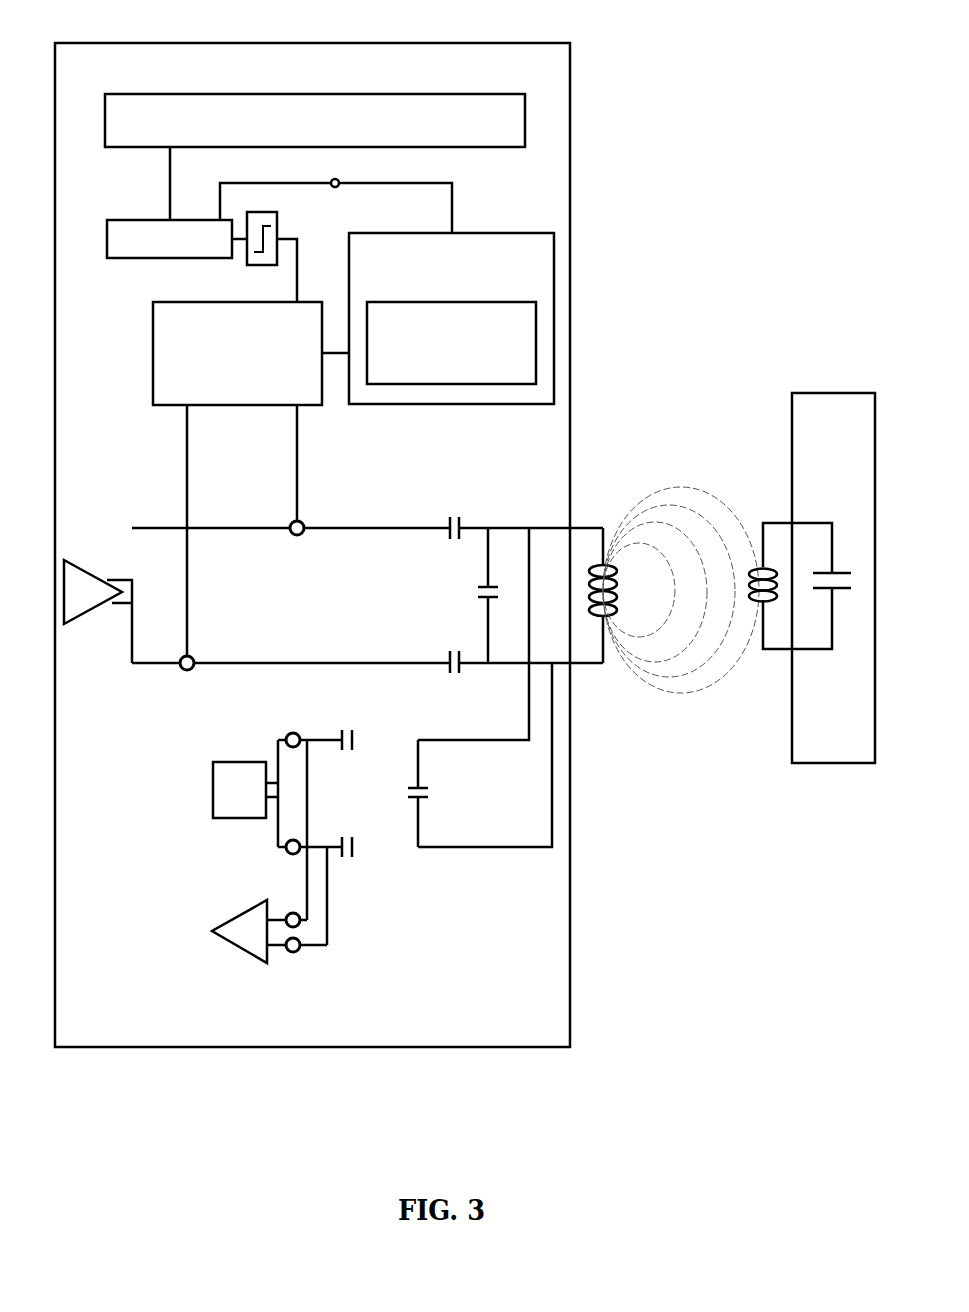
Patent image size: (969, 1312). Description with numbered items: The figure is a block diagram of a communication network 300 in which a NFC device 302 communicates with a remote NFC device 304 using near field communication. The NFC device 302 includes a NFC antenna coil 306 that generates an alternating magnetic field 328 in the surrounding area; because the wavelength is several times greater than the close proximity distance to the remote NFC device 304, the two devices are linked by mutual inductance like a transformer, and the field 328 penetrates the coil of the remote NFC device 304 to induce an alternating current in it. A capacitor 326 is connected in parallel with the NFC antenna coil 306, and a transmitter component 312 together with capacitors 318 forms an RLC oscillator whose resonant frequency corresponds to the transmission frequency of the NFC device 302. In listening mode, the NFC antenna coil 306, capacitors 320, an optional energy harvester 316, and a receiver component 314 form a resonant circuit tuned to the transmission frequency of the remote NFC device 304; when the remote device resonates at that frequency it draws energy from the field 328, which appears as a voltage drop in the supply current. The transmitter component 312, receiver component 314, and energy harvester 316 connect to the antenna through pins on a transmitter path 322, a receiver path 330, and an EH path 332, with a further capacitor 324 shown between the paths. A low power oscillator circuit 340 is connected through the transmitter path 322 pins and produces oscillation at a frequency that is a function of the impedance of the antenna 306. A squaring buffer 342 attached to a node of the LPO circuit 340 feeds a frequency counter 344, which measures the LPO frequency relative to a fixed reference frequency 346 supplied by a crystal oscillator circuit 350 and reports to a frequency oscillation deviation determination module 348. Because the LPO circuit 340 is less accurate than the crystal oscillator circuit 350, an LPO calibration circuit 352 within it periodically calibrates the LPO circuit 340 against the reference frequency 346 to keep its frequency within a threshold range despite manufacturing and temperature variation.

The communication network 300 is at (732, 63).
The NFC device 302 is at (505, 43).
The remote NFC device 304 is at (811, 393).
The NFC antenna coil 306 is at (606, 617).
The transmitter component 312 is at (84, 574).
The receiver component 314 is at (245, 904).
The energy harvester 316 is at (213, 787).
The capacitors 318 is at (448, 542).
The capacitors 320 is at (353, 752).
The transmitter path 322 is at (290, 522).
The capacitor 324 is at (424, 800).
The capacitor 326 is at (478, 590).
The electromagnetic field 328 is at (680, 487).
The receiver path 330 is at (297, 911).
The EH path 332 is at (287, 734).
The low power oscillator circuit 340 is at (153, 334).
The squaring buffer 342 is at (277, 224).
The frequency counter 344 is at (168, 258).
The reference frequency 346 is at (268, 182).
The frequency oscillation deviation determination module 348 is at (203, 94).
The crystal oscillator circuit 350 is at (498, 233).
The LPO calibration circuit 352 is at (451, 343).